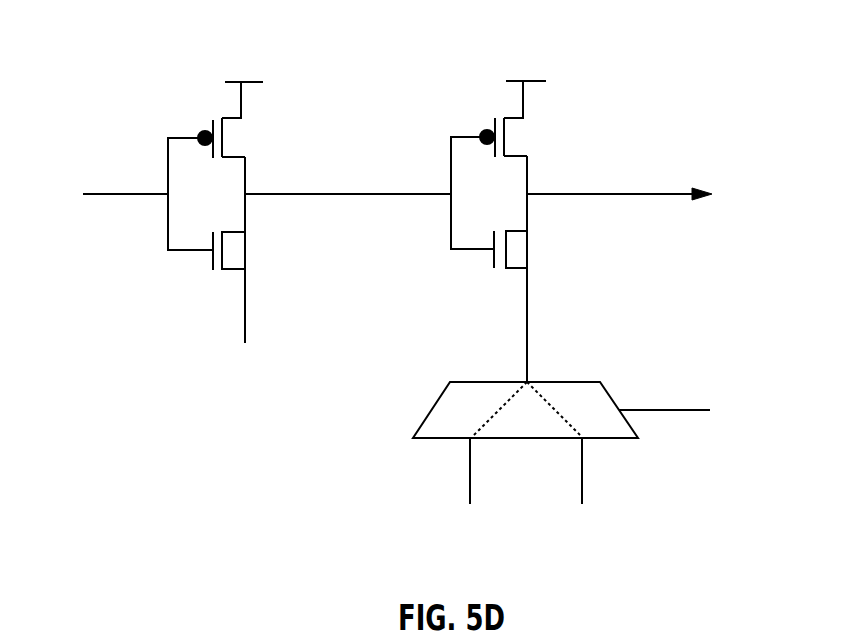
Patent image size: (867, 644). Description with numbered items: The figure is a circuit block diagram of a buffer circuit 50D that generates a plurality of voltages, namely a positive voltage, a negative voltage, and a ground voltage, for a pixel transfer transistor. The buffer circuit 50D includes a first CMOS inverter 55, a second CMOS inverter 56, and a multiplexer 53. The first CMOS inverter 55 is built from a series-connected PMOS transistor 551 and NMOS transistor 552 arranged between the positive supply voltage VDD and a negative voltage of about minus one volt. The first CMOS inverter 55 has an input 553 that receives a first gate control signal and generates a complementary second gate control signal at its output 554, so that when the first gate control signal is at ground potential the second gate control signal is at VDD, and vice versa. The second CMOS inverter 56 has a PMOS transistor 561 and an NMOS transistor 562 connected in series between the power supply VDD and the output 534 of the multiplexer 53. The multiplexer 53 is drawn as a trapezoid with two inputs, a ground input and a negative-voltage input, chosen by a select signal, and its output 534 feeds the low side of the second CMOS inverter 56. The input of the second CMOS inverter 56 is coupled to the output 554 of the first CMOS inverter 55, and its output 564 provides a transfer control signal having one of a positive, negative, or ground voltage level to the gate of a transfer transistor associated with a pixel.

The buffer circuit 50D is at (796, 89).
The first CMOS inverter 55 is at (292, 136).
The PMOS transistor 551 is at (204, 130).
The NMOS transistor 552 is at (206, 260).
The input 553 is at (148, 194).
The output 554 is at (348, 250).
The second CMOS inverter 56 is at (570, 131).
The PMOS transistor 561 is at (485, 130).
The NMOS transistor 562 is at (491, 259).
The output 564 is at (619, 212).
The multiplexer 53 is at (582, 380).
The output of multiplexer 534 is at (499, 325).